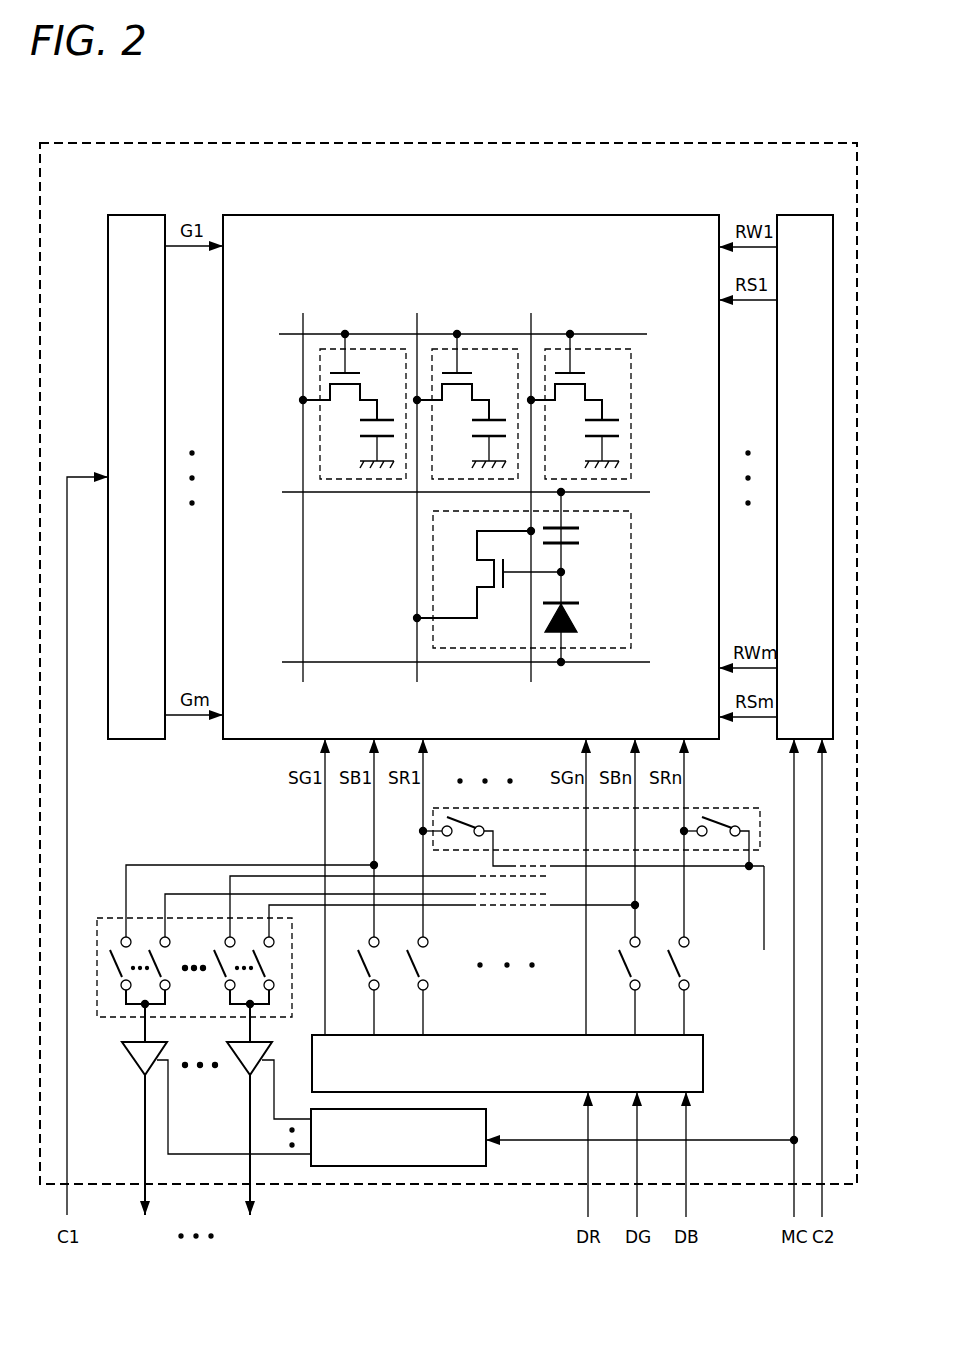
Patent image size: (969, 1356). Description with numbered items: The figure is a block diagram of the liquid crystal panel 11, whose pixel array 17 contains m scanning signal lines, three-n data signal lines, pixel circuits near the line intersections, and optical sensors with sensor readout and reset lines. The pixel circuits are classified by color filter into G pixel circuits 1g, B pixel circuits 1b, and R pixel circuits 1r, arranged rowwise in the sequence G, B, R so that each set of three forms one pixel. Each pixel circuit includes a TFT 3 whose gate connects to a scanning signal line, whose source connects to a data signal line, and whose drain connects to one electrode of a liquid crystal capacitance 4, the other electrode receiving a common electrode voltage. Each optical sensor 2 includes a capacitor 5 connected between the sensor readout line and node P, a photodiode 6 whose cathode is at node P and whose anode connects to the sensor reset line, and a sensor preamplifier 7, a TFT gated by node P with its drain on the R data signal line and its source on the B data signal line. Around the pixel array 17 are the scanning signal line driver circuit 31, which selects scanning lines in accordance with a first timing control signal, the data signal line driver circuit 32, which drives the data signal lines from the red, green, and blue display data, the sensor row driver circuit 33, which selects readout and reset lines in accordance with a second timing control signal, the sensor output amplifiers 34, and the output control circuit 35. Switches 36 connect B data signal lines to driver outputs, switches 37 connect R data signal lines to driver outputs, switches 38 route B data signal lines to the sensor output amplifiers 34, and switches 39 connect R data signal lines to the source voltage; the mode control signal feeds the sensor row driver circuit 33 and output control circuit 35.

The liquid crystal panel 11 is at (473, 143).
The pixel array 17 is at (473, 215).
The scanning signal line driver circuit 31 is at (137, 215).
The sensor row driver circuit 33 is at (805, 215).
The data signal line driver circuit 32 is at (703, 1066).
The output control circuit 35 is at (486, 1130).
The sensor output amplifier 34 is at (130, 1055).
The switch 36 is at (364, 972).
The switch 37 is at (413, 972).
The switch 38 is at (109, 918).
The switch 39 is at (728, 808).
The G pixel circuit 1g is at (353, 386).
The B pixel circuit 1b is at (484, 349).
The R pixel circuit 1r is at (597, 349).
The optical sensor 2 is at (502, 577).
The TFT 3 is at (360, 392).
The liquid crystal capacitance 4 is at (360, 431).
The capacitor 5 is at (585, 535).
The photodiode 6 is at (584, 626).
The sensor preamplifier 7 is at (490, 608).